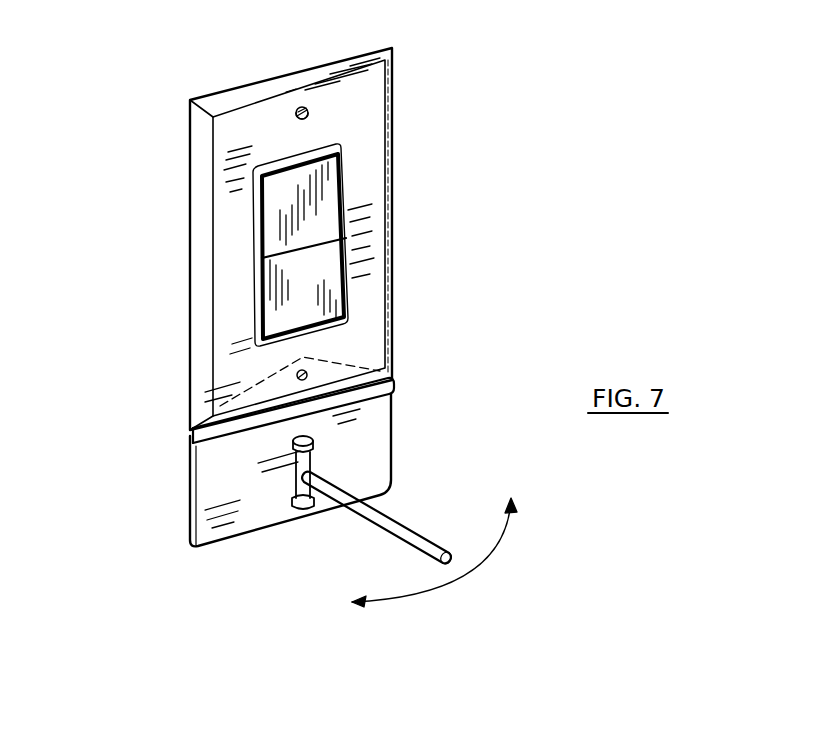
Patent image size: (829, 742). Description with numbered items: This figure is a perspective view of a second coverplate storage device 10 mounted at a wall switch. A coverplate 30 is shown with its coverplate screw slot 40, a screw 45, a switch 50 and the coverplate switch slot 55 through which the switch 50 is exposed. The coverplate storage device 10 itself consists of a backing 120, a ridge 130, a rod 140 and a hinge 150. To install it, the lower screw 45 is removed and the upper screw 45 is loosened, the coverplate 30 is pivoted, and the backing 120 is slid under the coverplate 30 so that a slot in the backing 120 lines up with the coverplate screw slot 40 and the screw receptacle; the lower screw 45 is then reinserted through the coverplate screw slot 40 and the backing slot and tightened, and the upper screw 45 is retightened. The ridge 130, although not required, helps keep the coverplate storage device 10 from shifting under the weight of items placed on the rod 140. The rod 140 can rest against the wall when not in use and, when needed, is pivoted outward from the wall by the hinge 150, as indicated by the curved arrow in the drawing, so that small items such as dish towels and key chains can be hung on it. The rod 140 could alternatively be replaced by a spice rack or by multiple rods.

The coverplate storage device 10 is at (178, 480).
The coverplate 30 is at (387, 185).
The coverplate screw slot 40 is at (300, 107).
The screw 45 is at (306, 117).
The switch 50 is at (330, 217).
The coverplate switch slot 55 is at (337, 337).
The backing 120 is at (367, 463).
The ridge 130 is at (362, 395).
The rod 140 is at (423, 555).
The hinge 150 is at (300, 512).